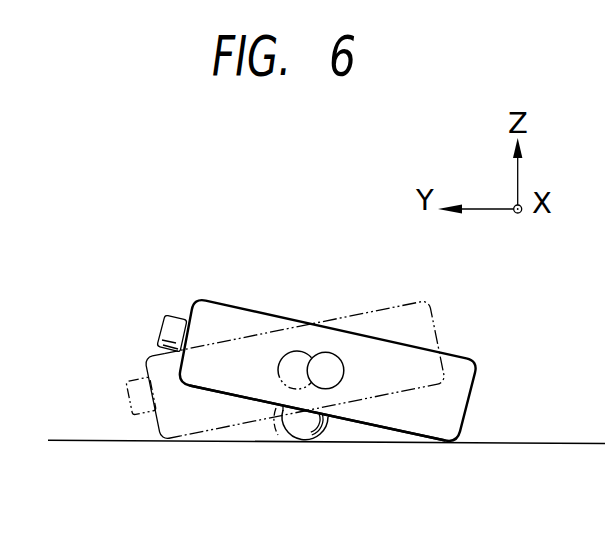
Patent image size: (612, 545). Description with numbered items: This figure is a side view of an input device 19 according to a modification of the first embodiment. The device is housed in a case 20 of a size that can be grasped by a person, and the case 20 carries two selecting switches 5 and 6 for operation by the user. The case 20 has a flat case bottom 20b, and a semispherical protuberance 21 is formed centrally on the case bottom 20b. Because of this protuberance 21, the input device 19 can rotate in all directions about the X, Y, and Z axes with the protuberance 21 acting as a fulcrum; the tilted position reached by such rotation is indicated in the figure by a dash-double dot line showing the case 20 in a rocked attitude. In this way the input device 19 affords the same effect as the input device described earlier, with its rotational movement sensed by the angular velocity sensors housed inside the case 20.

The selecting switch 5 is at (158, 315).
The selecting switch 6 is at (329, 368).
The input device 19 is at (294, 250).
The case 20 is at (466, 400).
The case bottom 20b is at (393, 431).
The semispherical protuberance 21 is at (310, 428).